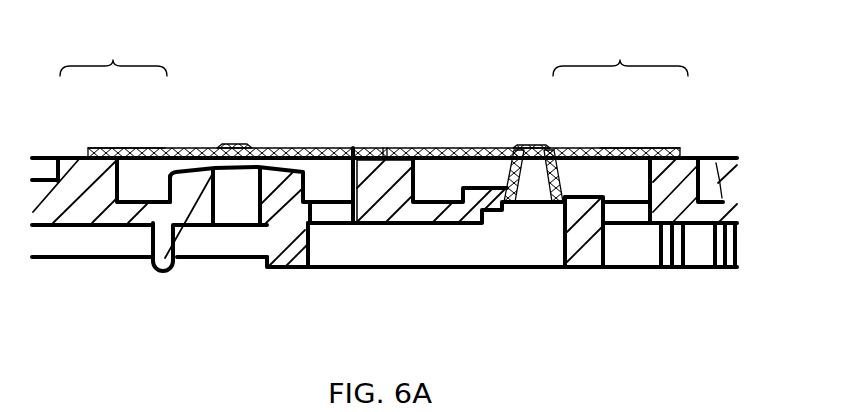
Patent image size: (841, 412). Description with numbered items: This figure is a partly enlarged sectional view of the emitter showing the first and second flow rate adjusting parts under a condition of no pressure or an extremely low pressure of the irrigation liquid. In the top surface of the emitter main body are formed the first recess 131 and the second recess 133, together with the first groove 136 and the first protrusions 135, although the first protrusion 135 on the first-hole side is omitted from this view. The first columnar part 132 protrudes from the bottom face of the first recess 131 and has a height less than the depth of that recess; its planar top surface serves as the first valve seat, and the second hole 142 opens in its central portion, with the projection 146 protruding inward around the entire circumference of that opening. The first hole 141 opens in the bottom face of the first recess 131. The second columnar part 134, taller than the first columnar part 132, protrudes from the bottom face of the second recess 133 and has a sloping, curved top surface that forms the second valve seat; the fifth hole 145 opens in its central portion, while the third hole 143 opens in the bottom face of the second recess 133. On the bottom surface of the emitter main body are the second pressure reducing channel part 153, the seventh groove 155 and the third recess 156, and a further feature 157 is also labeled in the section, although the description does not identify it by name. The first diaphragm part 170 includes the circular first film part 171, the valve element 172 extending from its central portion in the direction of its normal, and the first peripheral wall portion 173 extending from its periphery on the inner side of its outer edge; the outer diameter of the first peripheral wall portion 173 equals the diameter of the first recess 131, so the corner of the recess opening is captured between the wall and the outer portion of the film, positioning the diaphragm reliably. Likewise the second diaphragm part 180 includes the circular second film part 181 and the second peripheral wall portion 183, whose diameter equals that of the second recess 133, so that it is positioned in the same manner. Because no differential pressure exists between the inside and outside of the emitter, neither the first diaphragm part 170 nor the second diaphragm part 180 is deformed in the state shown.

The first recess 131 is at (436, 198).
The first columnar part 132 is at (583, 203).
The second recess 133 is at (343, 177).
The second columnar part 134 is at (278, 166).
The first protrusions 135 is at (485, 188).
The first groove 136 is at (190, 172).
The first hole 141 is at (629, 235).
The second hole 142 is at (527, 218).
The third hole 143 is at (335, 213).
The fifth hole 145 is at (235, 217).
The projection 146 is at (555, 213).
The second pressure reducing channel part 153 is at (698, 255).
The seventh groove 155 is at (403, 258).
The third recess 156 is at (56, 240).
The hook portion 157 is at (162, 264).
The first diaphragm part 170 is at (620, 51).
The first film part 171 is at (617, 150).
The valve element 172 is at (568, 170).
The first peripheral wall portion 173 is at (655, 150).
The second diaphragm part 180 is at (113, 48).
The second film part 181 is at (135, 152).
The second peripheral wall portion 183 is at (112, 152).